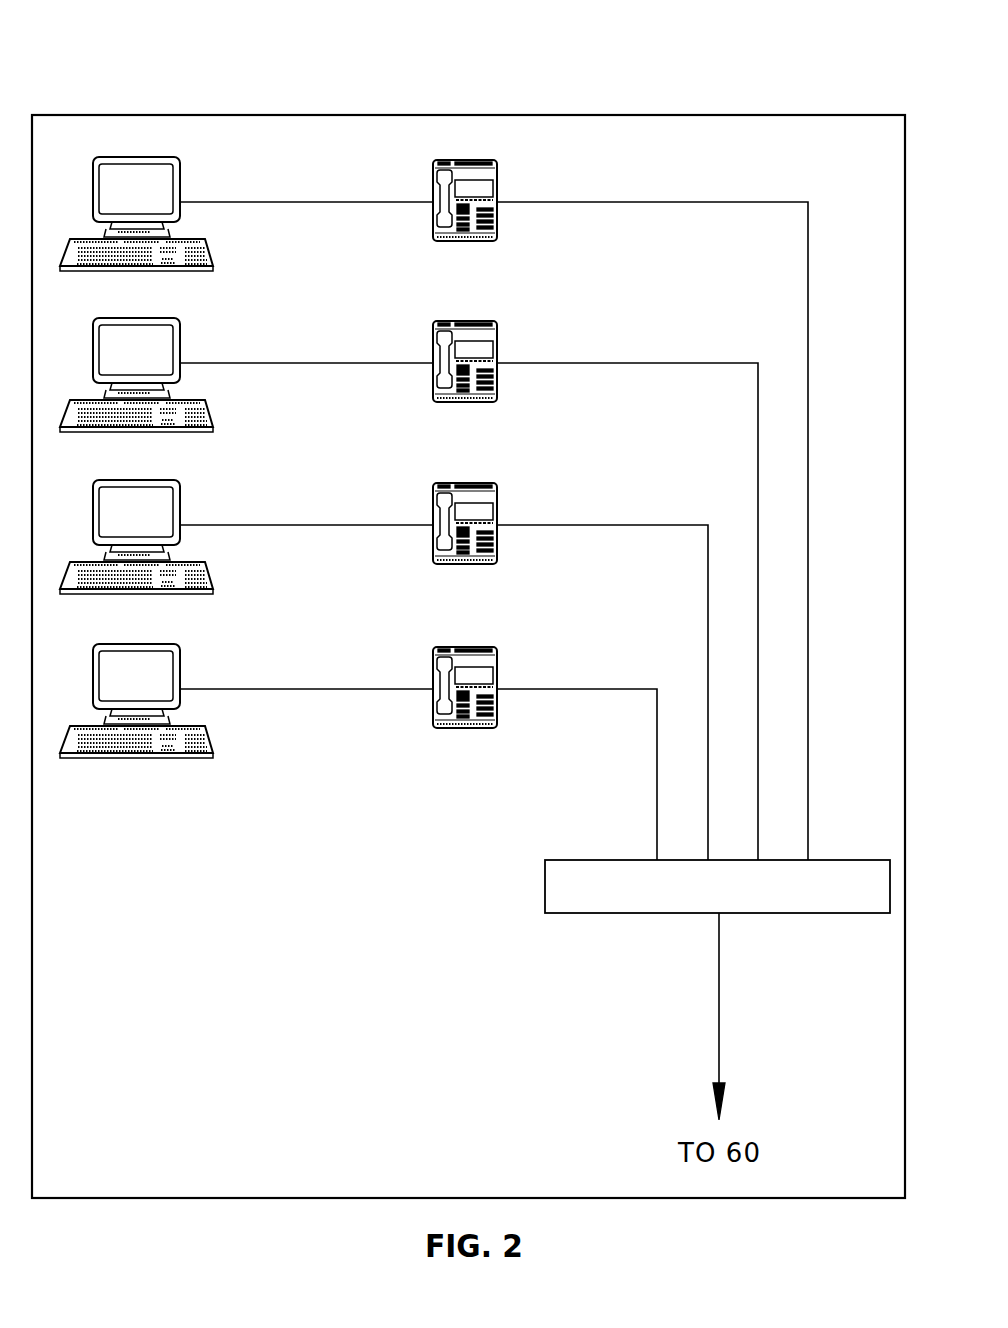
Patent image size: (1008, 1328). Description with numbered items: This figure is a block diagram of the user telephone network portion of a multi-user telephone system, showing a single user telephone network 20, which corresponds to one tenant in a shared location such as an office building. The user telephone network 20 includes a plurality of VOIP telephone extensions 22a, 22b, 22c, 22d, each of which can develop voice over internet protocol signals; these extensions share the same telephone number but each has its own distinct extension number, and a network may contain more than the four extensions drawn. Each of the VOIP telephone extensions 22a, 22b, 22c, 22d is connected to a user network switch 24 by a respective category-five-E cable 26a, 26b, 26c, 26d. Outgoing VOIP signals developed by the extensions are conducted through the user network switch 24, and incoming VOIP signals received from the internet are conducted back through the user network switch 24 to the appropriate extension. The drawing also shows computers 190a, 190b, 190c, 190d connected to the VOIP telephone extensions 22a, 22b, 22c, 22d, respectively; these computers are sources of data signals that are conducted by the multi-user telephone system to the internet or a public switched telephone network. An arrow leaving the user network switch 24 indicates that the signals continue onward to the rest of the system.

The first user telephone network 20 is at (662, 113).
The computer 190a is at (166, 202).
The computer 190b is at (166, 363).
The computer 190c is at (165, 525).
The computer 190d is at (166, 689).
The VOIP telephone extension 22a is at (504, 187).
The VOIP telephone extension 22b is at (504, 348).
The VOIP telephone extension 22c is at (503, 510).
The VOIP telephone extension 22d is at (504, 674).
The Category 5E cable 26a is at (808, 530).
The Category 5E cable 26b is at (758, 608).
The Category 5E cable 26c is at (708, 690).
The Category 5E cable 26d is at (657, 772).
The user network switch 24 is at (808, 913).